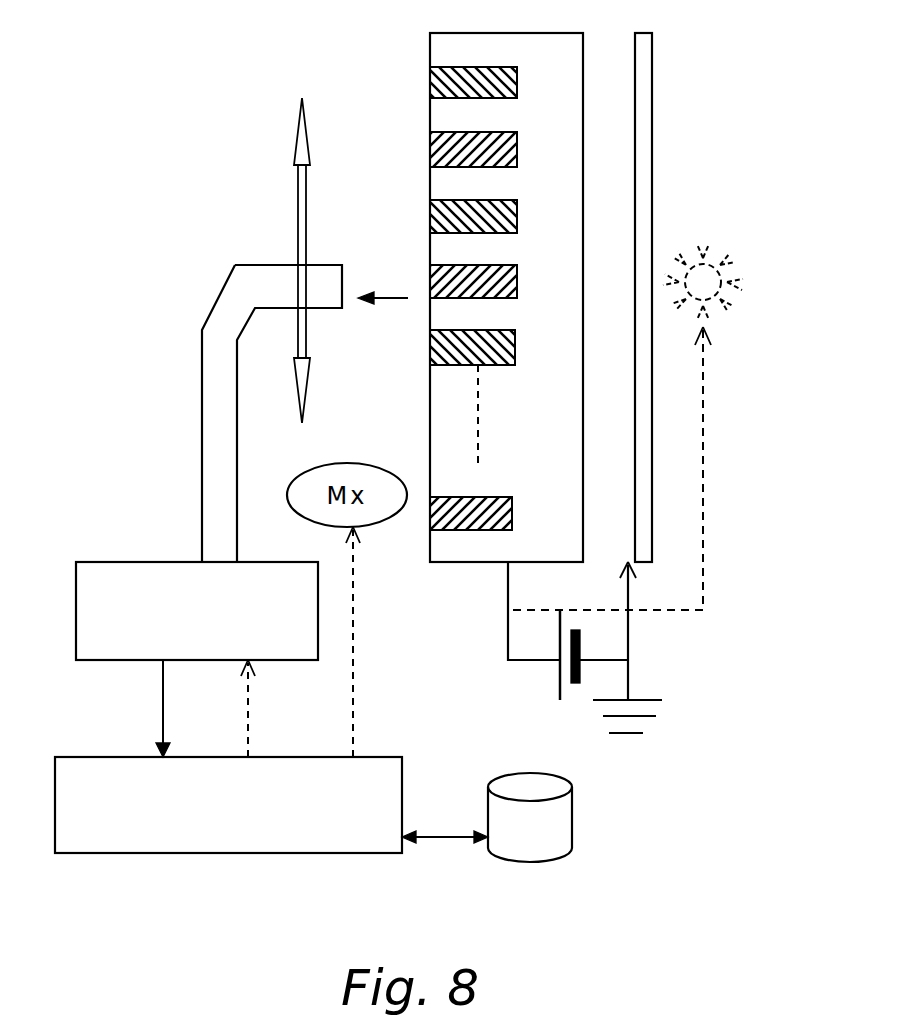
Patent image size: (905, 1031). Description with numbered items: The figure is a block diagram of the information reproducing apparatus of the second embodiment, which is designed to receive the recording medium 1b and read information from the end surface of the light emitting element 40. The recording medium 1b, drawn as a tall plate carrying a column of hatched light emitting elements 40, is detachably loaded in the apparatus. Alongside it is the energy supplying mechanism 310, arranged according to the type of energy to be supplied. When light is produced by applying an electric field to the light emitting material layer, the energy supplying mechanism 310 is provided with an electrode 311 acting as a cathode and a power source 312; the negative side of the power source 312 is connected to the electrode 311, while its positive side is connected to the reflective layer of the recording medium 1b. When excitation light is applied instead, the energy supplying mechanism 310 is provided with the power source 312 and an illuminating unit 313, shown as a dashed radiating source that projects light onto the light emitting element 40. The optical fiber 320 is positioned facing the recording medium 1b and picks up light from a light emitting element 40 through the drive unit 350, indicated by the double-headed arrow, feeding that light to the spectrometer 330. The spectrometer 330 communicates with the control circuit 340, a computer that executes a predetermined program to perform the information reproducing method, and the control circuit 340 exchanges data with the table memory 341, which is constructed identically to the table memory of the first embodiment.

The recording medium 1b is at (430, 52).
The light emitting element 40 is at (428, 78).
The optical fiber 320 is at (324, 262).
The drive unit 350 is at (341, 260).
The electrode 311 is at (653, 172).
The illuminating unit 313 is at (690, 242).
The power source 312 is at (547, 682).
The energy supplying mechanism 310 is at (640, 663).
The spectrometer 330 is at (76, 578).
The control circuit 340 is at (56, 757).
The table memory 341 is at (492, 782).